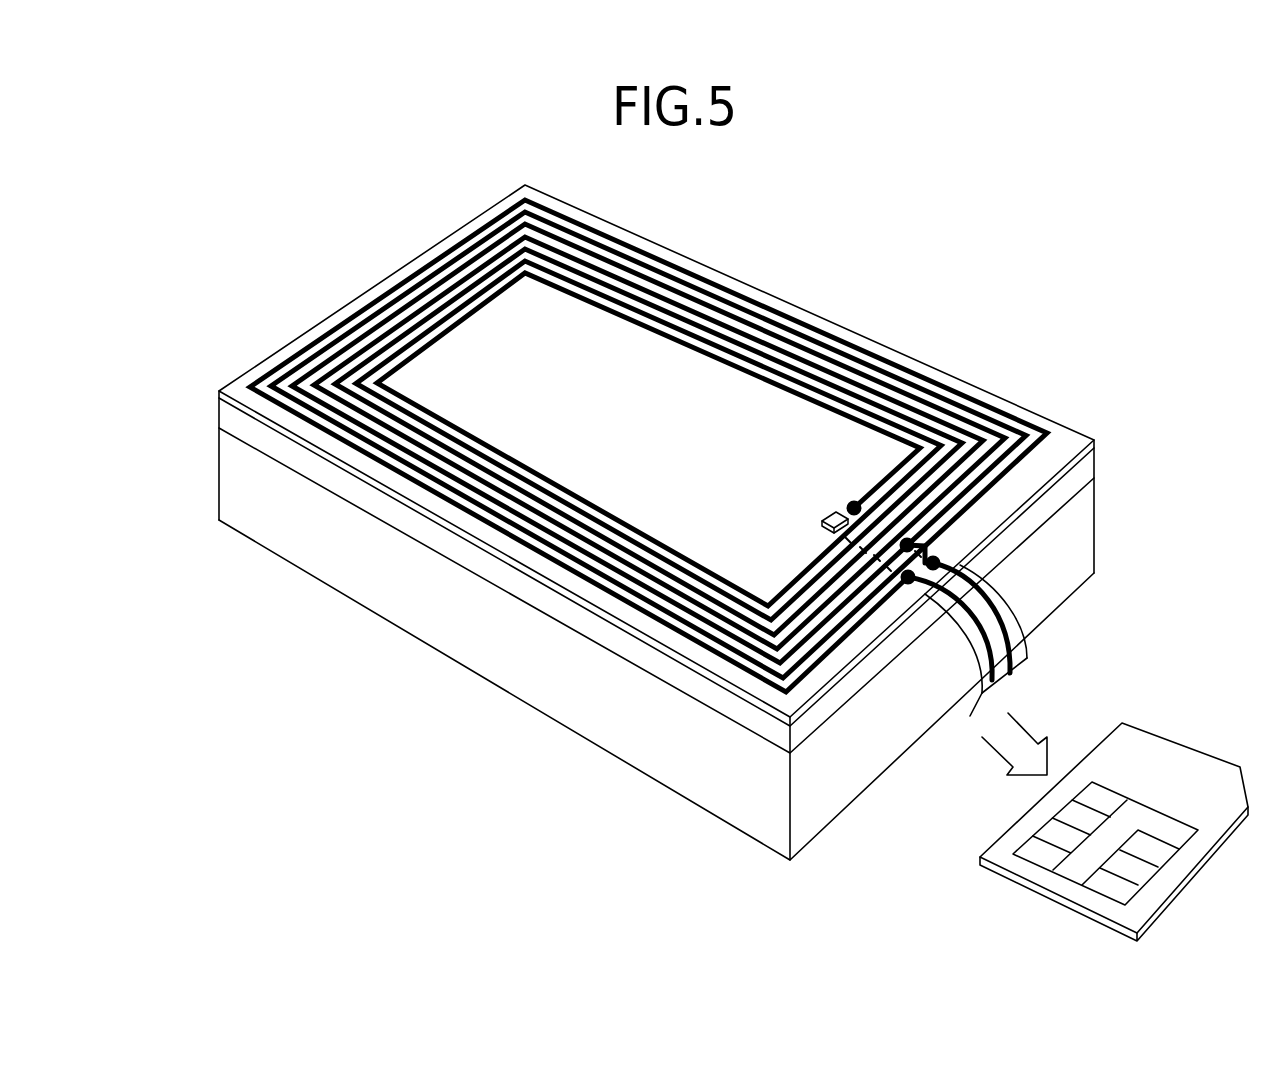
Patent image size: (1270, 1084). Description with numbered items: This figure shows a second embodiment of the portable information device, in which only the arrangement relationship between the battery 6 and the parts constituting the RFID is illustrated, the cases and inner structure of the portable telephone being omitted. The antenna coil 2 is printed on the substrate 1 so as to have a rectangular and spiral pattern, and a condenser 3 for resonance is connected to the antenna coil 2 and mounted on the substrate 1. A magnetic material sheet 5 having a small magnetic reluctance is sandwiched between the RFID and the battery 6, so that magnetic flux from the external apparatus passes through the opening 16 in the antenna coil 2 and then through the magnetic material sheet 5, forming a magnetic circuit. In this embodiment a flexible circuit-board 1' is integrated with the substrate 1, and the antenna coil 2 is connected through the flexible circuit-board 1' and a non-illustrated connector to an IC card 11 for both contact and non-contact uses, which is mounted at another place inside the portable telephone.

The substrate 1 is at (656, 455).
The flexible circuit-board 1' is at (1010, 639).
The antenna coil 2 is at (400, 283).
The condenser 3 is at (826, 520).
The magnetic material sheet 5 is at (228, 412).
The battery 6 is at (753, 786).
The IC card 11 is at (1155, 752).
The opening 16 is at (577, 348).